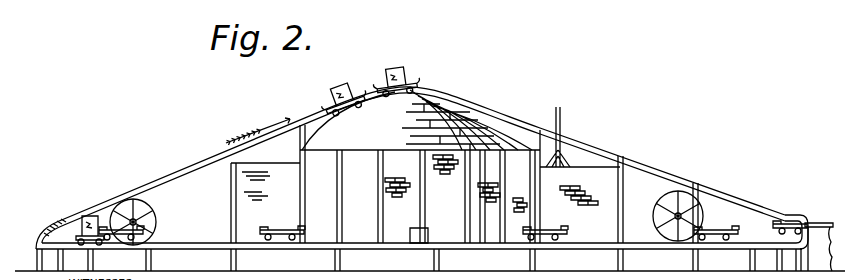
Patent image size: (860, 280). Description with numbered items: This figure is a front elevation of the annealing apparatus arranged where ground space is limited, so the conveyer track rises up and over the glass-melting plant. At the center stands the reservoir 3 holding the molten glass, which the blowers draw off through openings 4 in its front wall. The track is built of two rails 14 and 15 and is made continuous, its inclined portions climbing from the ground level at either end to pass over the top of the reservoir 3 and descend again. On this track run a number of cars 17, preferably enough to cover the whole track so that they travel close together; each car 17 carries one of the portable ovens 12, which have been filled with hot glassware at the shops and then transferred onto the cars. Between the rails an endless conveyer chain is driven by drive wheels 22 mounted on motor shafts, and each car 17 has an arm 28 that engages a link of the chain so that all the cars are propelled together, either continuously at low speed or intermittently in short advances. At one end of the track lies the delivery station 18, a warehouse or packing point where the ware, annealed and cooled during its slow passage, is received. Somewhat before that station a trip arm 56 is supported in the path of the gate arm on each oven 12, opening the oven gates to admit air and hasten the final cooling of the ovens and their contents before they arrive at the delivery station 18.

The reservoir 3 is at (464, 184).
The openings 4 is at (424, 227).
The portable ovens 12 is at (406, 67).
The rail 14 is at (191, 166).
The rail 15 is at (44, 232).
The cars 17 is at (418, 78).
The delivery station 18 is at (818, 222).
The drive wheel 22 is at (150, 197).
The arm 28 is at (396, 96).
The trip arm 56 is at (561, 112).